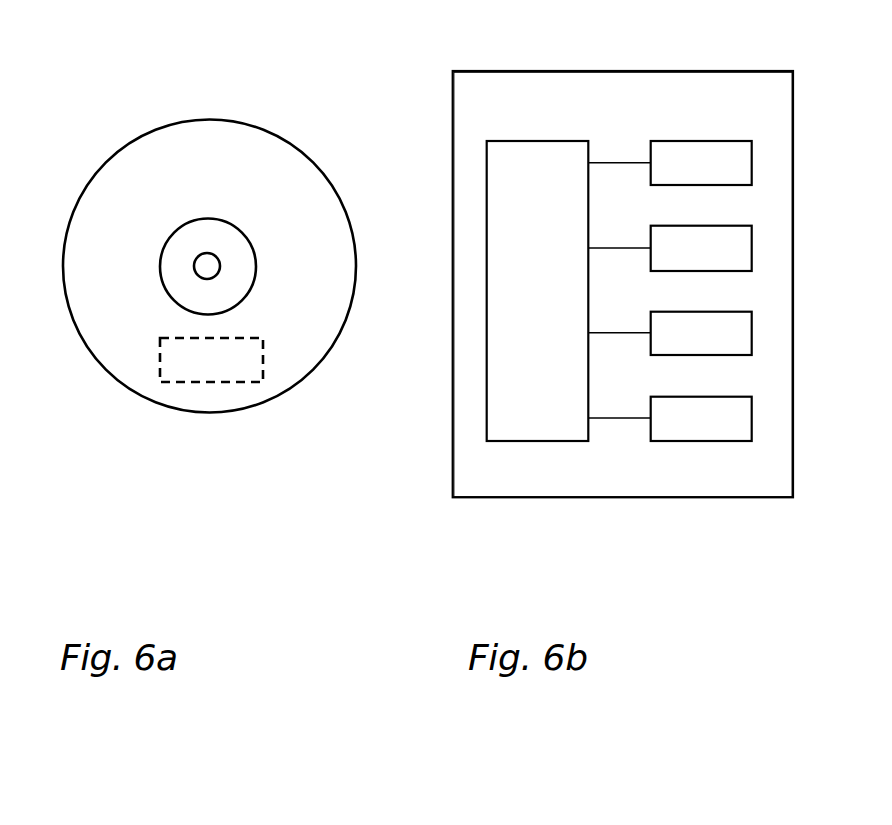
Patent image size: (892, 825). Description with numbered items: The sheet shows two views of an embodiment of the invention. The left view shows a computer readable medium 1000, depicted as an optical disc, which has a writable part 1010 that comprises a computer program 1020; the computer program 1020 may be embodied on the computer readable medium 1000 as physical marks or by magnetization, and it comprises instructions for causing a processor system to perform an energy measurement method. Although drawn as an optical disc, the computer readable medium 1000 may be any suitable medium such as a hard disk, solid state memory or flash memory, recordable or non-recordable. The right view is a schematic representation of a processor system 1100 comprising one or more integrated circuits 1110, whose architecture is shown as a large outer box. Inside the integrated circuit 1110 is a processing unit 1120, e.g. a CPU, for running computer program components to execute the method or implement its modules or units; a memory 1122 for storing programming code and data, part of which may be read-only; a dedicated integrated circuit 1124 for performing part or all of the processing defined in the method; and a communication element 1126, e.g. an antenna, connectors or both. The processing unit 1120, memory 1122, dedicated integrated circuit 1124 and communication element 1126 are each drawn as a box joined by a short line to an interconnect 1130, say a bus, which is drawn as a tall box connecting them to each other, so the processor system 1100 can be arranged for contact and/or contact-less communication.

In FIG. 6A, the computer readable medium 1000 is at (117, 118).
In FIG. 6A, the writable part 1010 is at (191, 244).
In FIG. 6A, the computer program 1020 is at (211, 360).
In FIG. 6B, the computing system 1100 is at (777, 543).
In FIG. 6B, the integrated circuit 1110 is at (623, 285).
In FIG. 6B, the processing unit 1120 is at (669, 163).
In FIG. 6B, the memory 1122 is at (669, 248).
In FIG. 6B, the dedicated integrated circuit 1124 is at (669, 333).
In FIG. 6B, the communication element 1126 is at (669, 419).
In FIG. 6B, the interconnect 1130 is at (538, 291).